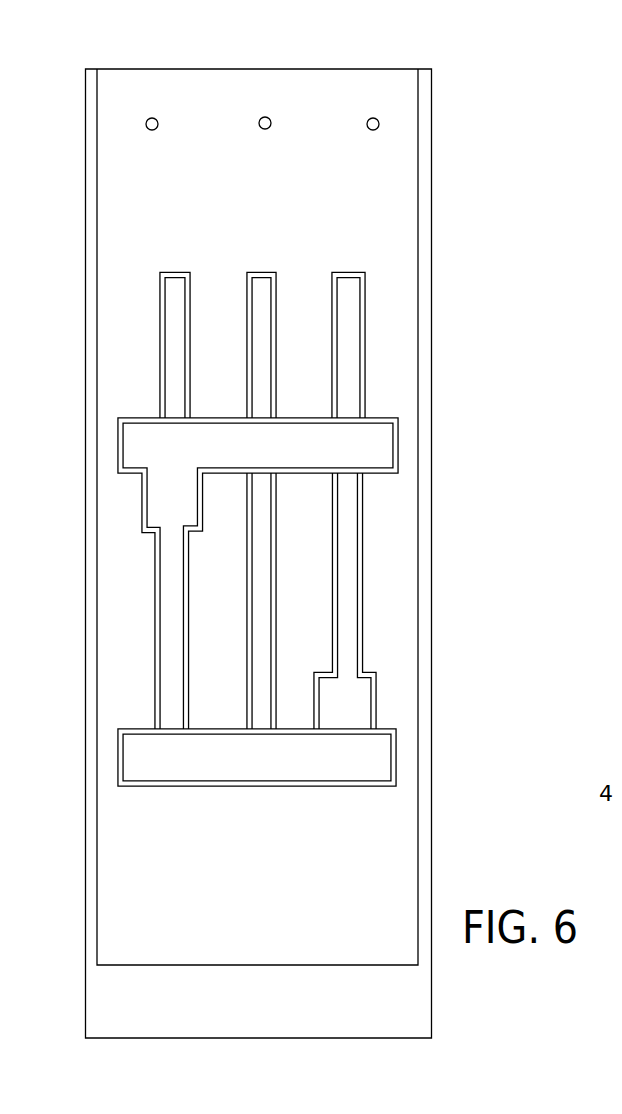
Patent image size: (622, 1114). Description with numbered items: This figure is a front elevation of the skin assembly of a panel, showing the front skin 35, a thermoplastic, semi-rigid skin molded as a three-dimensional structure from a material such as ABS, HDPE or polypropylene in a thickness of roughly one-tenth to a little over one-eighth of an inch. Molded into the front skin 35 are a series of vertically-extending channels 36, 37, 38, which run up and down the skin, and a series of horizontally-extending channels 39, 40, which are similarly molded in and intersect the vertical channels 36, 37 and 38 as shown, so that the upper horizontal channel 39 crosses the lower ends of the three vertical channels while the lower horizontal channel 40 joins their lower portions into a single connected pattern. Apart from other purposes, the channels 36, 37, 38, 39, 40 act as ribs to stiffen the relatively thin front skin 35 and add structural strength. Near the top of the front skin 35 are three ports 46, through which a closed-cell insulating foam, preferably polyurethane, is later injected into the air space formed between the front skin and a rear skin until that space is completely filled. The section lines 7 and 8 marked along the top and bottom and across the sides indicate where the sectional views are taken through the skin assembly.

The front skin 35 is at (394, 166).
The vertically-extending channel 36 is at (177, 273).
The vertically-extending channel 37 is at (262, 273).
The vertically-extending channel 38 is at (348, 273).
The horizontally-extending channel 39 is at (398, 443).
The horizontally-extending channel 40 is at (399, 758).
The ports 46 is at (151, 116).
The section line 7- 7 is at (200, 42).
The section line 8- 8 is at (113, 625).